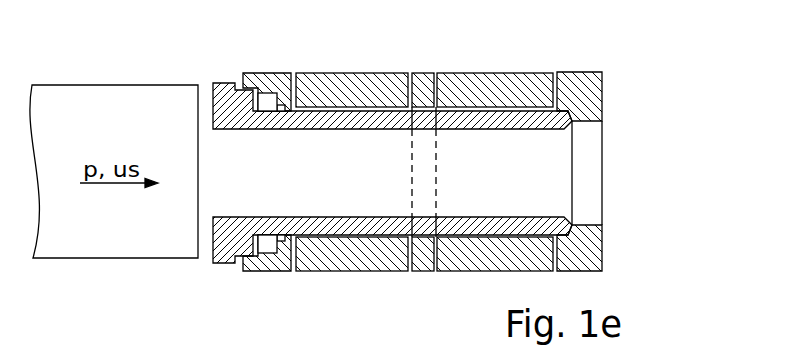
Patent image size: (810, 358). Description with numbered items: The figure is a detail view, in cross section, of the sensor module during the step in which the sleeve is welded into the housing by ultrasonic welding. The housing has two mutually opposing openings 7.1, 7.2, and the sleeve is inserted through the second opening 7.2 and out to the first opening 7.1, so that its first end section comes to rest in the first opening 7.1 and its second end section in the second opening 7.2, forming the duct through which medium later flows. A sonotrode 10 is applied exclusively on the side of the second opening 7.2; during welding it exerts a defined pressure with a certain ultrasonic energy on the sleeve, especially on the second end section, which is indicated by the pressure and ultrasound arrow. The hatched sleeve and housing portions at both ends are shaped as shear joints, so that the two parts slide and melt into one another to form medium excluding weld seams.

The sonotrode 10 is at (108, 95).
The second opening 7.2 is at (218, 142).
The first opening 7.1 is at (600, 147).